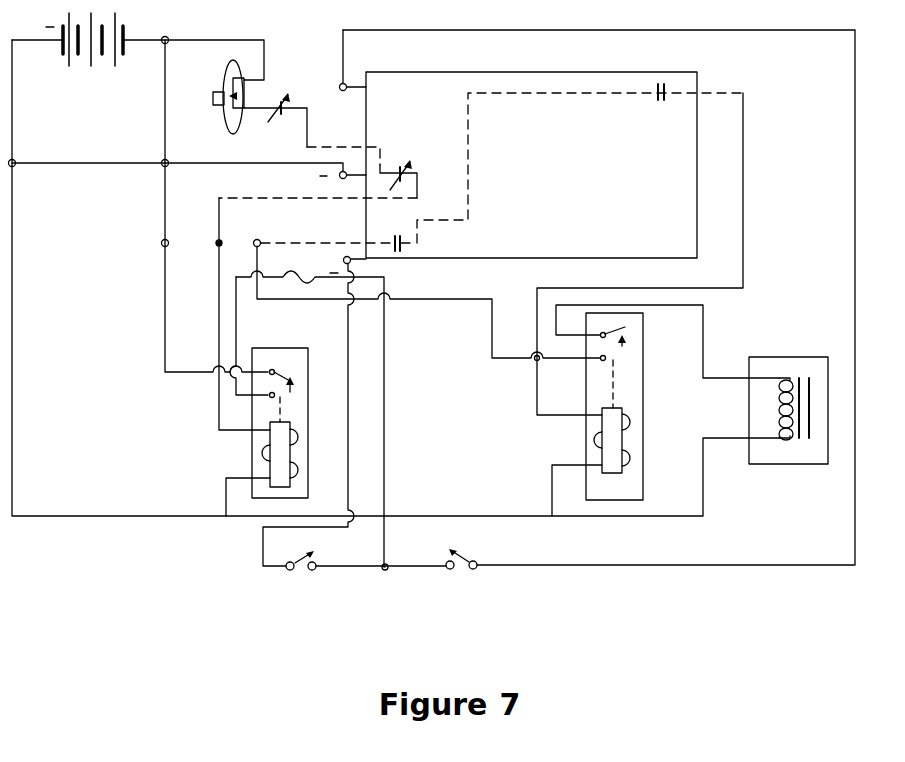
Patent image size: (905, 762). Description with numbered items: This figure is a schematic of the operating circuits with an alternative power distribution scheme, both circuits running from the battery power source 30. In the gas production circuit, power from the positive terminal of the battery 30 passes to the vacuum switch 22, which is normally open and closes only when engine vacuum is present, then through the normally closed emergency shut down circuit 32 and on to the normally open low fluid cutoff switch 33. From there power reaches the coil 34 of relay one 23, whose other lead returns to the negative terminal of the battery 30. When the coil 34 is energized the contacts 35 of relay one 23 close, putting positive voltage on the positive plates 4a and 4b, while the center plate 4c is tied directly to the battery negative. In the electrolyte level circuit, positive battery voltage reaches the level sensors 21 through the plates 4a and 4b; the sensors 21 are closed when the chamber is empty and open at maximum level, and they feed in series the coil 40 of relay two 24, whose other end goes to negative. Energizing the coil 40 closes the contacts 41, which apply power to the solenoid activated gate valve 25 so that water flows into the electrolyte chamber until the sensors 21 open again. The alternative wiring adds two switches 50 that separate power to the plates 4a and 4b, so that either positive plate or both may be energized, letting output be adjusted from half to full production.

The battery power source 30 is at (95, 65).
The vacuum switch 22 is at (227, 82).
The emergency shut down circuit 32 is at (287, 96).
The positive plate 4a is at (346, 83).
The positive plate 4b is at (351, 262).
The center plate 4c is at (339, 177).
The low fluid cutoff switch 33 is at (408, 165).
The level sensors 21 is at (407, 242).
The relay one 23 is at (290, 404).
The contacts of relay one 35 is at (280, 368).
The coil of relay one 34 is at (273, 462).
The relay two 24 is at (609, 406).
The contacts of relay two 41 is at (624, 346).
The coil of relay two 40 is at (600, 447).
The solenoid activated gate valve 25 is at (790, 357).
The switches 50 is at (310, 577).